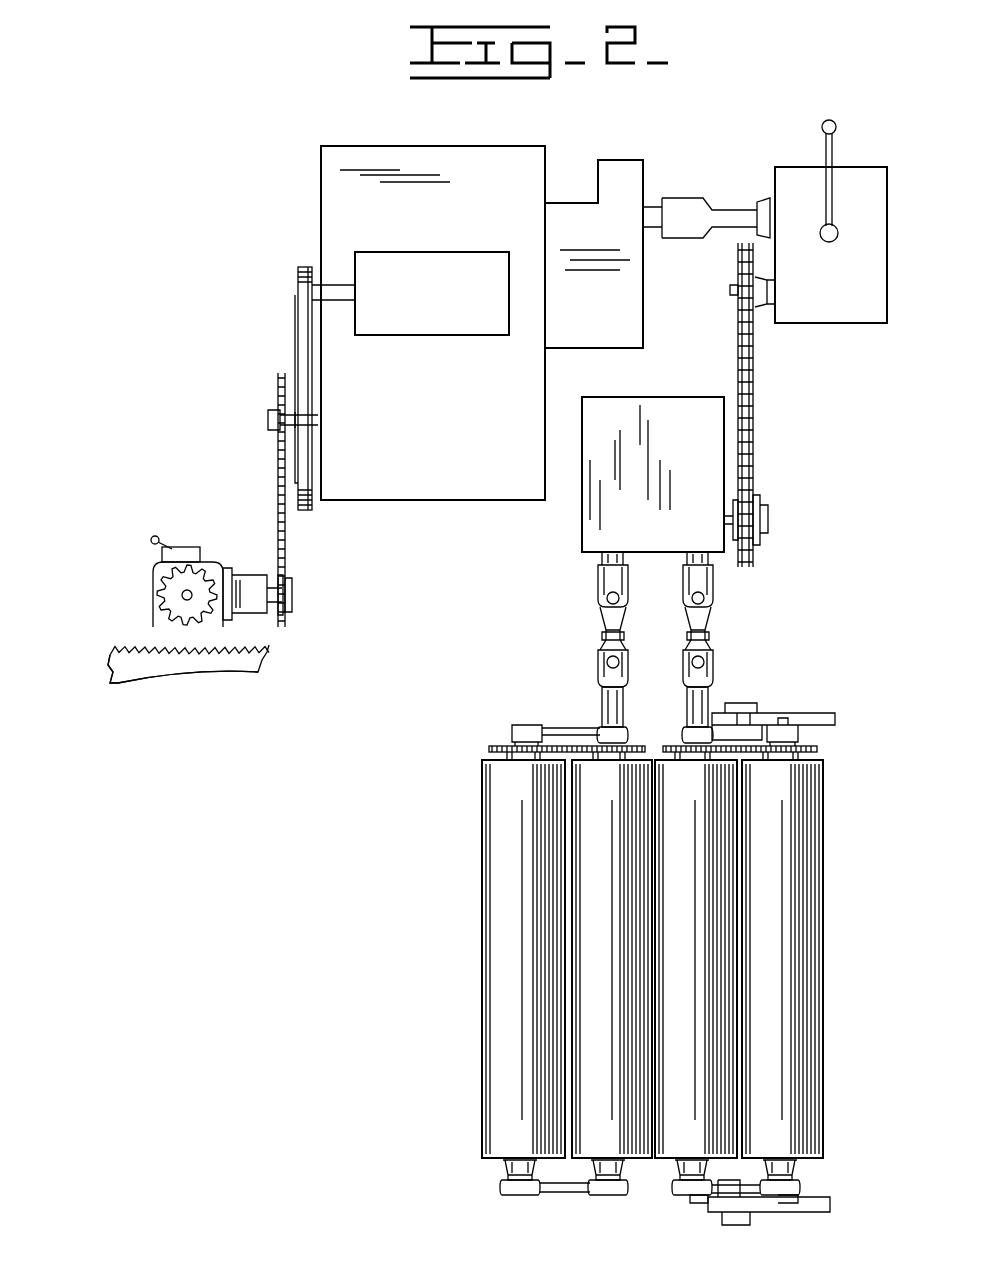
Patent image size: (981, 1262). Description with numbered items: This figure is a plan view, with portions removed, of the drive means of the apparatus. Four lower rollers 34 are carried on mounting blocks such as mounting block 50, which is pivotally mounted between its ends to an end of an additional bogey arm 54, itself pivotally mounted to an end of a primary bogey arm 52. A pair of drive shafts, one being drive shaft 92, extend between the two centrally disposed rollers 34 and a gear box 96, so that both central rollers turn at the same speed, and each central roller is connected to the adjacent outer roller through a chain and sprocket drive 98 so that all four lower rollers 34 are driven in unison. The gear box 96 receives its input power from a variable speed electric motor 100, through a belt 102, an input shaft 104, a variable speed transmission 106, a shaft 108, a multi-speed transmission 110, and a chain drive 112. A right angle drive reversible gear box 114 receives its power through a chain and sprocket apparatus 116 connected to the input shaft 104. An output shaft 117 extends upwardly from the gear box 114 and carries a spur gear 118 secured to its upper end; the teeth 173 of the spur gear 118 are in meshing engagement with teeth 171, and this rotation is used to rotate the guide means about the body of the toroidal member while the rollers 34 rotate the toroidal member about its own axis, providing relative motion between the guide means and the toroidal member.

The rollers 34 is at (528, 957).
The mounting block 50 is at (568, 1197).
The primary bogey arm 52 is at (715, 1188).
The additional bogey arm 54 is at (815, 1200).
The drive shaft 92 is at (604, 556).
The gear box 96 is at (680, 463).
The chain and sprocket drive 98 is at (481, 740).
The variable speed electric motor 100 is at (434, 303).
The belt 102 is at (298, 320).
The input shaft 104 is at (318, 420).
The variable speed transmission 106 is at (488, 423).
The shaft 108 is at (695, 200).
The multi-speed transmission 110 is at (848, 300).
The chain drive 112 is at (755, 448).
The right angle drive reversible gear box 114 is at (160, 562).
The chain and sprocket apparatus 116 is at (278, 447).
The output shaft 117 is at (191, 592).
The spur gear 118 is at (200, 605).
The teeth 171 is at (135, 625).
The teeth 173 is at (157, 625).